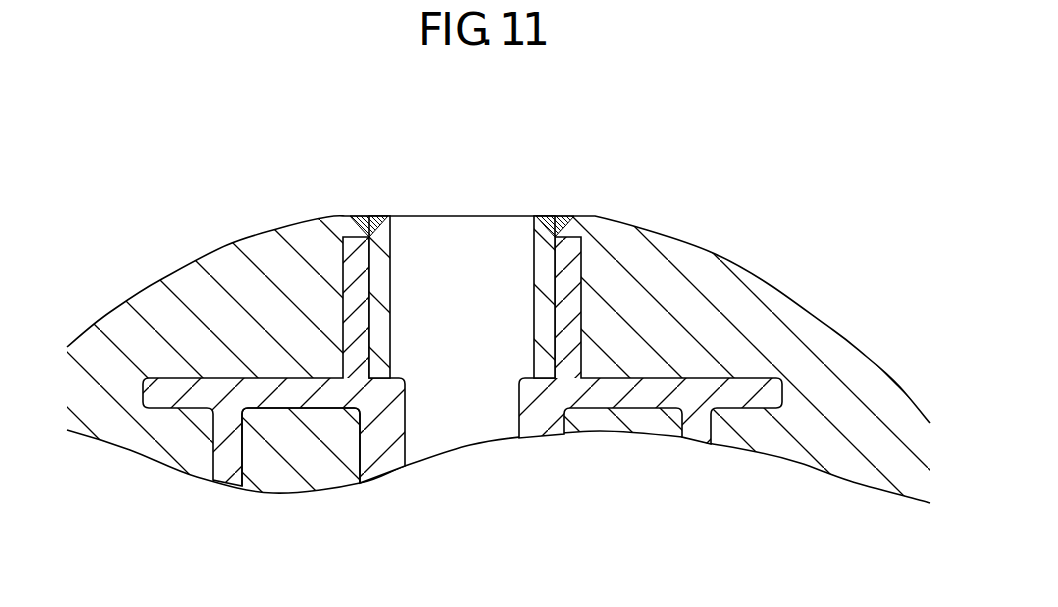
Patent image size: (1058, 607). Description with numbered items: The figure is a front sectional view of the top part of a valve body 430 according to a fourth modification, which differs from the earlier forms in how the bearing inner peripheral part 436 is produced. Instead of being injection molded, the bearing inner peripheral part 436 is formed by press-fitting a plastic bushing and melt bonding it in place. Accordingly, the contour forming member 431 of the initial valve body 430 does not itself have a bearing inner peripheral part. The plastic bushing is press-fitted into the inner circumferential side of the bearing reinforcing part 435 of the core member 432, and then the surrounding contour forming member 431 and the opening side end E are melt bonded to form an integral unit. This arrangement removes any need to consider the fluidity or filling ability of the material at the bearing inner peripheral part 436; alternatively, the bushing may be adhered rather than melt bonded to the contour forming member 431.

The valve body 430 is at (498, 318).
The contour forming member 431 is at (702, 271).
The core member 432 is at (383, 448).
The bearing reinforcing part 435 is at (342, 280).
The bearing inner peripheral part 436 is at (380, 262).
The opening side end E is at (558, 216).